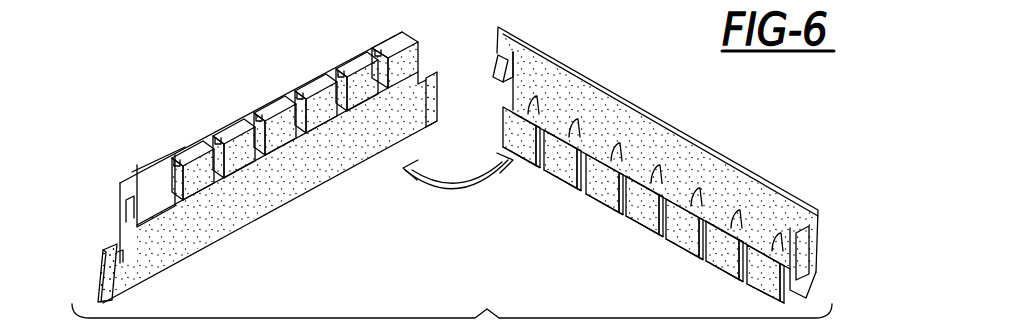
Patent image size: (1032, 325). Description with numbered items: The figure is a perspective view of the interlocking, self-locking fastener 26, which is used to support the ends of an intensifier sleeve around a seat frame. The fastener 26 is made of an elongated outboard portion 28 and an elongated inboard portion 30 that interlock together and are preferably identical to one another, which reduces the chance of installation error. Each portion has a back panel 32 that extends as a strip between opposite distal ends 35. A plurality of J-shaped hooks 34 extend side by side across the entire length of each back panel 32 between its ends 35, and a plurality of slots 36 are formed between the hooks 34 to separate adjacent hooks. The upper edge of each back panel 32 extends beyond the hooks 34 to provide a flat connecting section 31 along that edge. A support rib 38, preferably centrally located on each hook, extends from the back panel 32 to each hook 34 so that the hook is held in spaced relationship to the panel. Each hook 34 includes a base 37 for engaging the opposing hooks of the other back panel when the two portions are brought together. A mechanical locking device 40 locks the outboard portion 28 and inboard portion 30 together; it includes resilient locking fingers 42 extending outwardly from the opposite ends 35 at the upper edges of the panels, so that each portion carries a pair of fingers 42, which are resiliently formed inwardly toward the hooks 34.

The fastener 26 is at (168, 108).
The outboard portion 28 is at (280, 192).
The inboard portion 30 is at (625, 130).
The flat connecting section 31 is at (388, 154).
The back panel 32 is at (200, 229).
The J-shaped hook 34 is at (365, 95).
The distal end 35 is at (117, 207).
The slot 36 is at (375, 50).
The base 37 is at (158, 178).
The support rib 38 is at (770, 240).
The mechanical locking device 40 is at (92, 264).
The resilient locking finger 42 is at (112, 263).